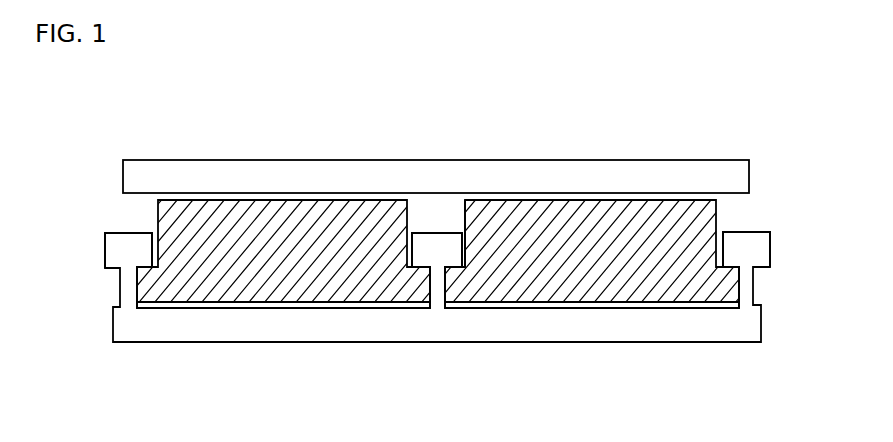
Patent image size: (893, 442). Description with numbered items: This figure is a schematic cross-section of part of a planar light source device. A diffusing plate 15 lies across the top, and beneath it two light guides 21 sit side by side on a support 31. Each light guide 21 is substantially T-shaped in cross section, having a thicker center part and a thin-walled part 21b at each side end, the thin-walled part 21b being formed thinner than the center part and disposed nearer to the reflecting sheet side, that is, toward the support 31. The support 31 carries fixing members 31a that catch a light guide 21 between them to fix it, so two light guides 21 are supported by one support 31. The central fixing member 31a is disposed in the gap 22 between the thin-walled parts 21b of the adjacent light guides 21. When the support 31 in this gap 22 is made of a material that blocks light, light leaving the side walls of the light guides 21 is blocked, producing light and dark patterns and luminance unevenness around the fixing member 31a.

The diffusing plate 15 is at (749, 170).
The light guide 21 is at (713, 213).
The thin-walled part 21b is at (453, 290).
The gap 22 is at (468, 219).
The support 31 is at (761, 323).
The fixing member 31a is at (423, 240).